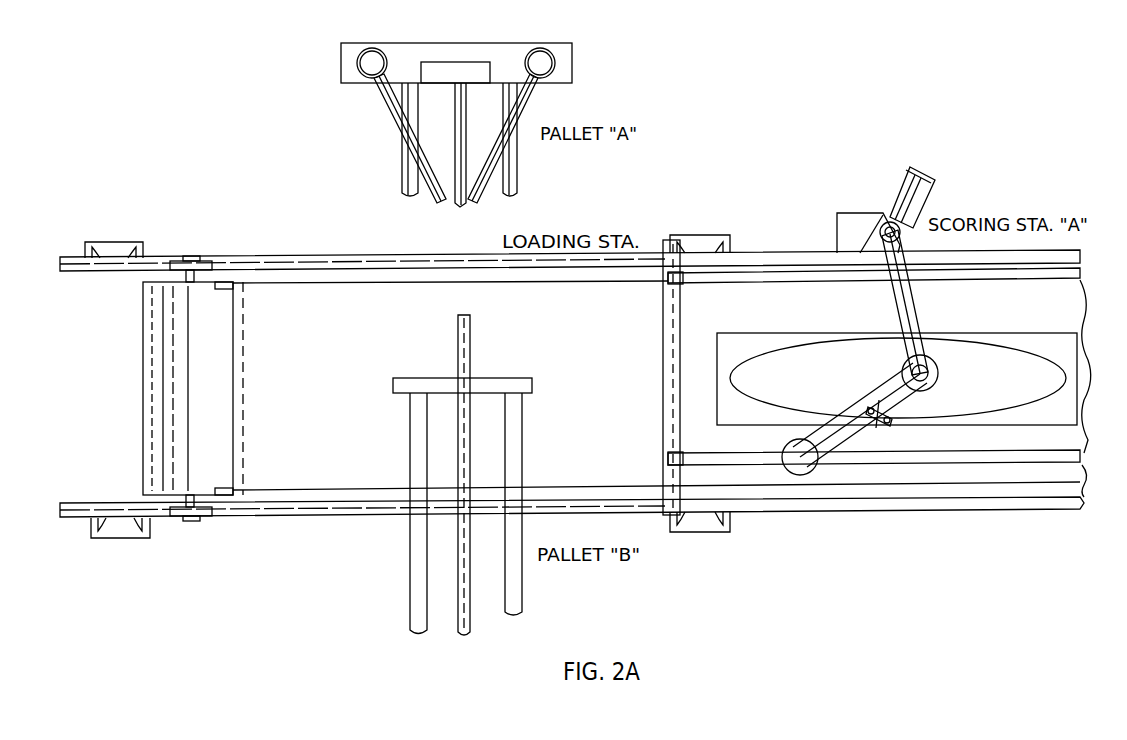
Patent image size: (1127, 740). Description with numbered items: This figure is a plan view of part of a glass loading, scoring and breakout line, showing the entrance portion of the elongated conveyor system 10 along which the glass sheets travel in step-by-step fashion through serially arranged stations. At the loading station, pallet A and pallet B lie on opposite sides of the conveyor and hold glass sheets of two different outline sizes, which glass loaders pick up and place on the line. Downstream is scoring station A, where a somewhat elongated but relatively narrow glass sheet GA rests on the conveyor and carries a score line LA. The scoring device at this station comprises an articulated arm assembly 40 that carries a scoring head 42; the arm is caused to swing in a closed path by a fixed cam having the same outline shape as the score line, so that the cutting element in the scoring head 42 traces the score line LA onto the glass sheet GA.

The conveyor system 10 is at (939, 518).
The articulated arm assembly 40 is at (920, 313).
The scoring head 42 is at (879, 425).
The score line LA is at (987, 340).
The glass sheet GA is at (1033, 333).